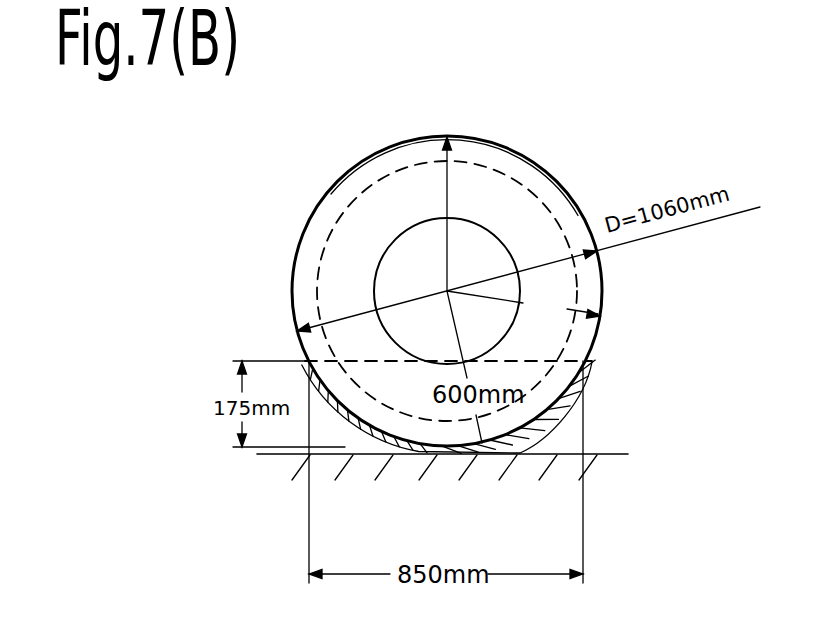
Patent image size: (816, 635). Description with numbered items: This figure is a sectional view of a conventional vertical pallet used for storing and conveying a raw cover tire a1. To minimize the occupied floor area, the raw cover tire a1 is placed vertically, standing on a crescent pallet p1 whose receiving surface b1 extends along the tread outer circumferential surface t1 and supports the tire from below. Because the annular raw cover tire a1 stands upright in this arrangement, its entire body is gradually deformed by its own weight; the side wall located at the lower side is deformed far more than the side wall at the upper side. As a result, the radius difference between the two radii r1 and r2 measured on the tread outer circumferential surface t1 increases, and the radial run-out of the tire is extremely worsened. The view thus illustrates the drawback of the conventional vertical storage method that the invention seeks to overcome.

The raw cover tire a1 is at (301, 196).
The tread outer circumferential surface t1 is at (480, 137).
The radius r1 is at (523, 304).
The radius r2 is at (448, 214).
The receiving surface b1 is at (410, 450).
The crescent pallet p1 is at (548, 408).